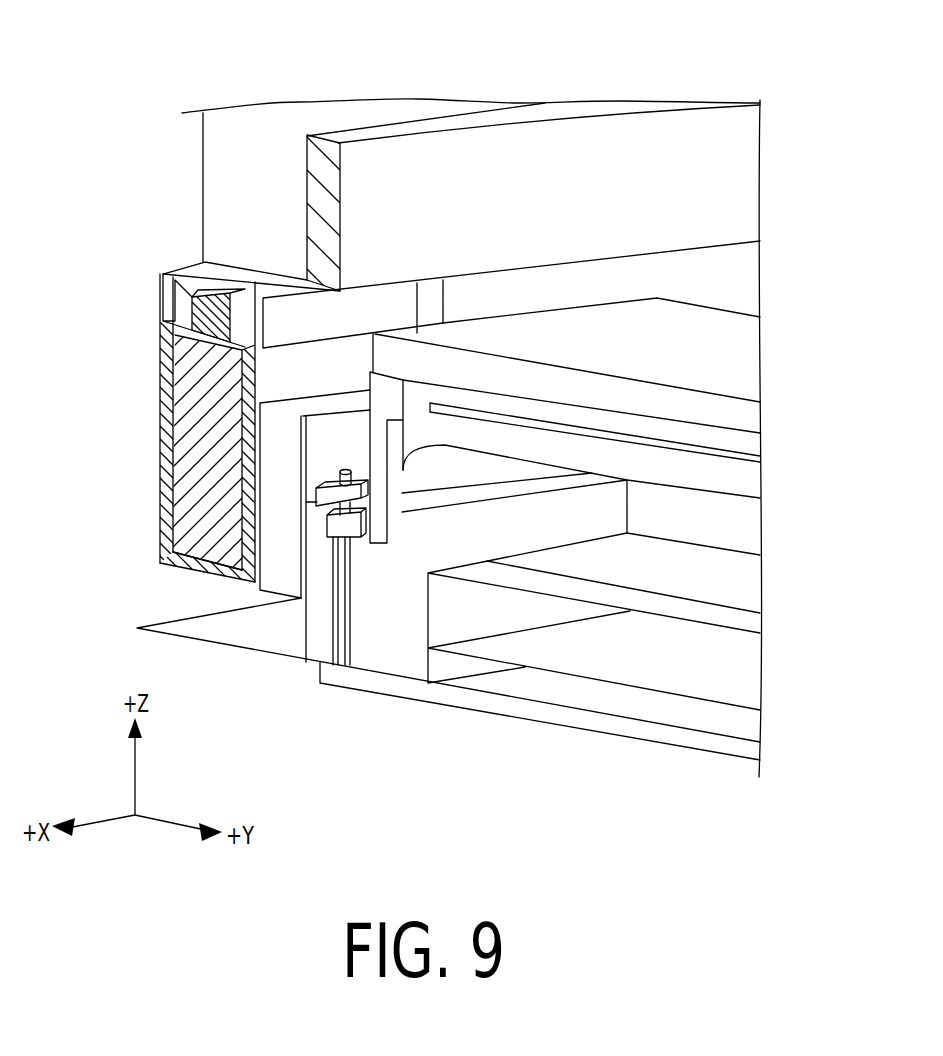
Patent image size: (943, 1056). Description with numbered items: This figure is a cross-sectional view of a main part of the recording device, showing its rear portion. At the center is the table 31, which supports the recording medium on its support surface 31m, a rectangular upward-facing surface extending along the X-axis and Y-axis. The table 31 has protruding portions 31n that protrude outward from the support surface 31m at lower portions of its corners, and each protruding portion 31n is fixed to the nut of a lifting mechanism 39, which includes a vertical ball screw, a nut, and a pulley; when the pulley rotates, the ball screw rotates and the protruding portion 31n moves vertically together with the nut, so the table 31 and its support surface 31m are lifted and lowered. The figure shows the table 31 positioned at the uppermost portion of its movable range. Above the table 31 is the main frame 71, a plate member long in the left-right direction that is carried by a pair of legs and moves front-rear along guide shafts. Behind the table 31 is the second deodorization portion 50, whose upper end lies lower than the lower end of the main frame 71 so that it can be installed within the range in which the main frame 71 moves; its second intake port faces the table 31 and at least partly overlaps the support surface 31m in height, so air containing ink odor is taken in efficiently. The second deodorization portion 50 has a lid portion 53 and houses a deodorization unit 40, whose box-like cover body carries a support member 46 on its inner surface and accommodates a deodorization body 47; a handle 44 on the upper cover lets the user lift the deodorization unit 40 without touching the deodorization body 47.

The table 31 is at (693, 267).
The support surface 31m is at (707, 338).
The protruding portion 31n is at (357, 542).
The lifting mechanism 39 is at (331, 613).
The deodorization unit 40 is at (160, 390).
The handle 44 is at (168, 270).
The support member 46 is at (200, 562).
The deodorization body 47 is at (202, 487).
The second deodorization portion 50 is at (147, 310).
The lid portion 53 is at (200, 270).
The main frame 71 is at (441, 160).